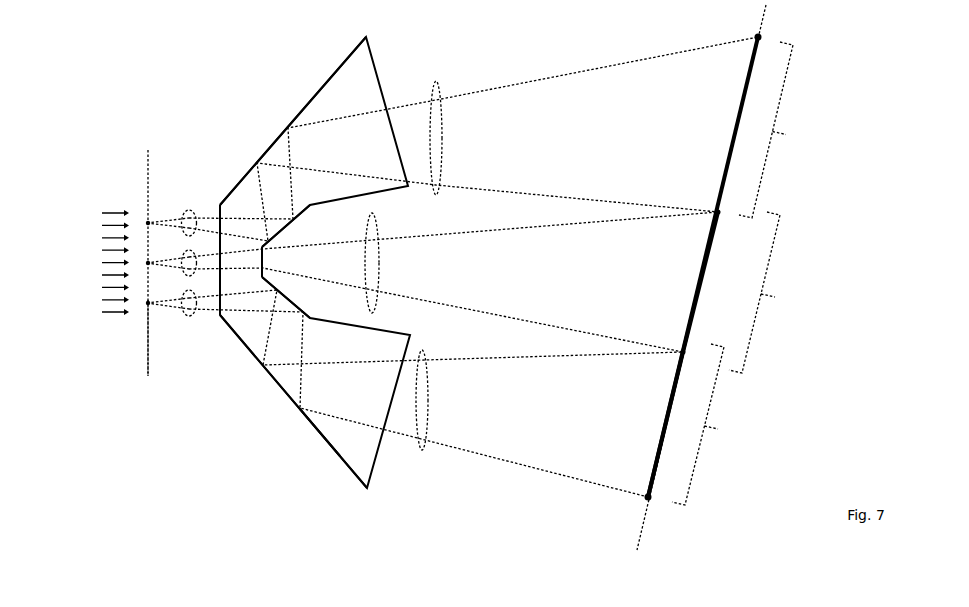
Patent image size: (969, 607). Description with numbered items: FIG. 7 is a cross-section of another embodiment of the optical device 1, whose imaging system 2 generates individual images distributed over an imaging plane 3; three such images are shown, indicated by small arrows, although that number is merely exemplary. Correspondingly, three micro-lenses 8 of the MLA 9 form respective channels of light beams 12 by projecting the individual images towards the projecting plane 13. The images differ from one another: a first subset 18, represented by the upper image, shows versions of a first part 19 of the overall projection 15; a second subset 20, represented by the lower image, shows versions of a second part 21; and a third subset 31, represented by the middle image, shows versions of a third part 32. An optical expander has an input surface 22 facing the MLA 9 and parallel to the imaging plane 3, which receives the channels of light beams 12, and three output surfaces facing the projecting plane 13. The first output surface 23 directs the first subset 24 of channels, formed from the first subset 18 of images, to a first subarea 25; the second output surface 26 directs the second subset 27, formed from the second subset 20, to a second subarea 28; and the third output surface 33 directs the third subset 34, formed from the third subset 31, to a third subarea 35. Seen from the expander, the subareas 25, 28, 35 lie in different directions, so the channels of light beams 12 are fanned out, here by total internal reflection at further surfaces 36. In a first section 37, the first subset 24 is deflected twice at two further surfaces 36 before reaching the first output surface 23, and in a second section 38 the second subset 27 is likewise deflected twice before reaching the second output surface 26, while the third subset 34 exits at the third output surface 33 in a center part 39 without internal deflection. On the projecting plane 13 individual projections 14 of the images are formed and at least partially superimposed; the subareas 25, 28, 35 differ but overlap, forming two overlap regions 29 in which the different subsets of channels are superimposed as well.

The optical device 1 is at (120, 64).
The imaging system 2 is at (57, 392).
The imaging plane 3 is at (148, 150).
The micro-lenses 8 is at (191, 212).
The micro-lens array (MLA) 9 is at (189, 308).
The channels of light beams 12 is at (434, 268).
The projecting plane 13 is at (637, 533).
The individual projections 14 is at (724, 44).
The overall projection 15 is at (758, 37).
The first subset of individual images 18 is at (151, 218).
The first part of the overall projection 19 is at (679, 260).
The second subset of individual images 20 is at (148, 327).
The second part of the overall projection 21 is at (653, 468).
The input surface 22 is at (216, 318).
The first output surface 23 is at (323, 133).
The first subset of channels of light beams 24 is at (438, 81).
The first subarea 25 is at (779, 130).
The second output surface 26 is at (323, 368).
The second subset of channels of light beams 27 is at (422, 448).
The second subarea 28 is at (710, 424).
The overlap regions 29 is at (722, 210).
The third subset of individual images 31 is at (142, 223).
The third part of the overall projection 32 is at (695, 300).
The third output surface 33 is at (272, 242).
The third subset of channels of light beams 34 is at (380, 275).
The third subarea 35 is at (767, 292).
The further surfaces 36 is at (303, 302).
The first section 37 is at (343, 93).
The second section 38 is at (350, 445).
The center part 39 is at (268, 268).